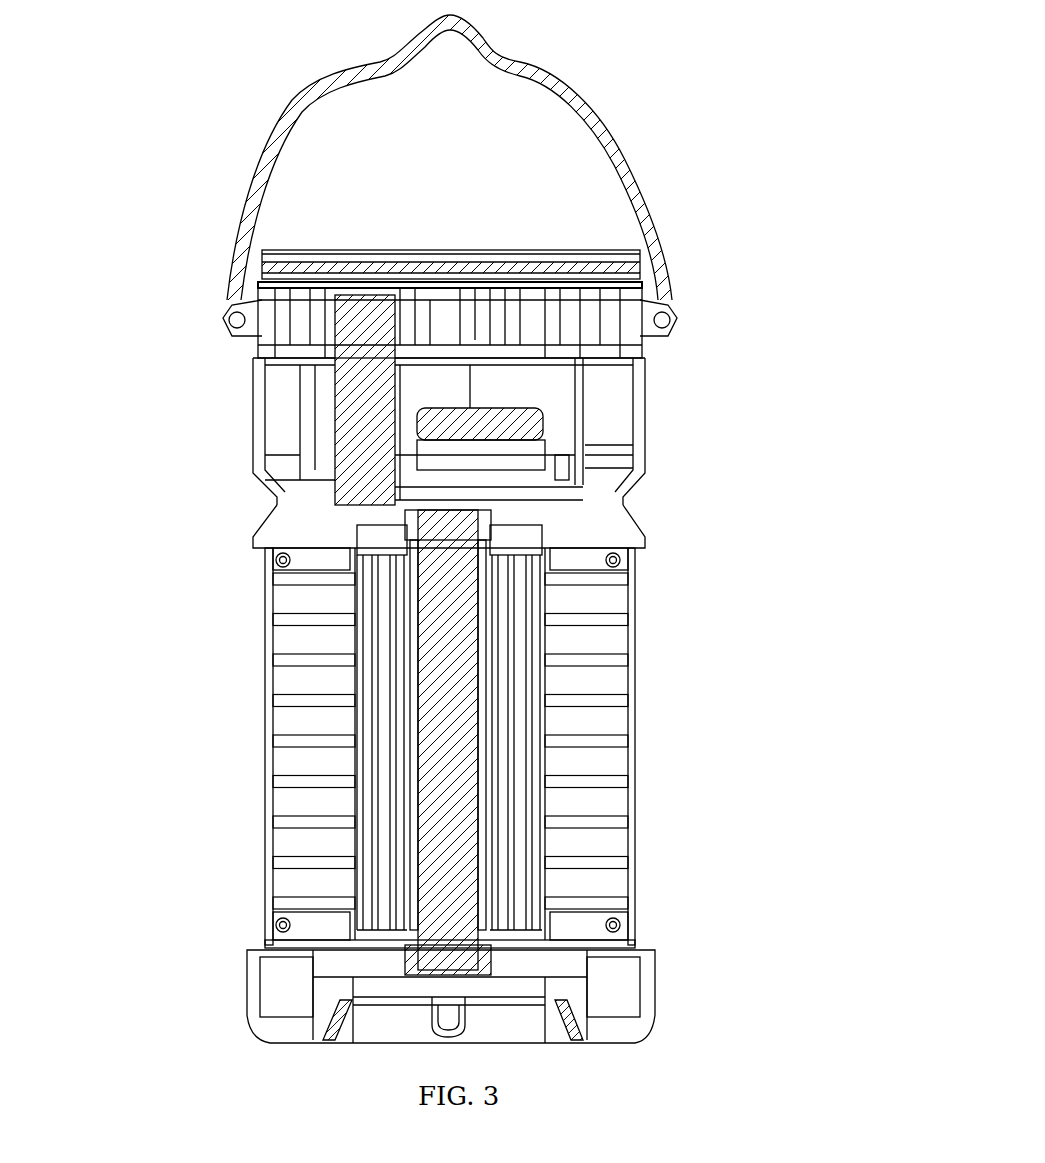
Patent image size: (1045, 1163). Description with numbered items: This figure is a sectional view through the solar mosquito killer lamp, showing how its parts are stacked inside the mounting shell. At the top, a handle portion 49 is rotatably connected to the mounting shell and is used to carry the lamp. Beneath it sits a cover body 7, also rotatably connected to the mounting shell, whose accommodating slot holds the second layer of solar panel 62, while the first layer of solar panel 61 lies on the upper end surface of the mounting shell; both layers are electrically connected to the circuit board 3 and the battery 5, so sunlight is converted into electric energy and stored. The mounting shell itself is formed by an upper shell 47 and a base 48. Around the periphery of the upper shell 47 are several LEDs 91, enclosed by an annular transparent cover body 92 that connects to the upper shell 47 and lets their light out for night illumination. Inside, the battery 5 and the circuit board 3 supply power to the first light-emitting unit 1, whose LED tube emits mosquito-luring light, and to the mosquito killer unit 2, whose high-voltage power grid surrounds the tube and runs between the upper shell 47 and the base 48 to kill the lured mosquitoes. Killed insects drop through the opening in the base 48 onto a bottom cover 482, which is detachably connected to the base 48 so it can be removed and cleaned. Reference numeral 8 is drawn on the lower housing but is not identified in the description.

The handle portion 49 is at (600, 113).
The cover body 7 is at (512, 246).
The second layer of solar panel 62 is at (335, 272).
The first layer of solar panel 61 is at (250, 283).
The upper shell 47 is at (650, 355).
The battery 5 is at (355, 420).
The transparent cover body 92 is at (648, 425).
The LEDs 91 is at (645, 445).
The circuit board 3 is at (540, 420).
The lower body 8 is at (580, 742).
The first light-emitting unit 1 is at (445, 670).
The mosquito killer unit 2 is at (360, 765).
The base 48 is at (285, 992).
The bottom cover 482 is at (463, 1030).